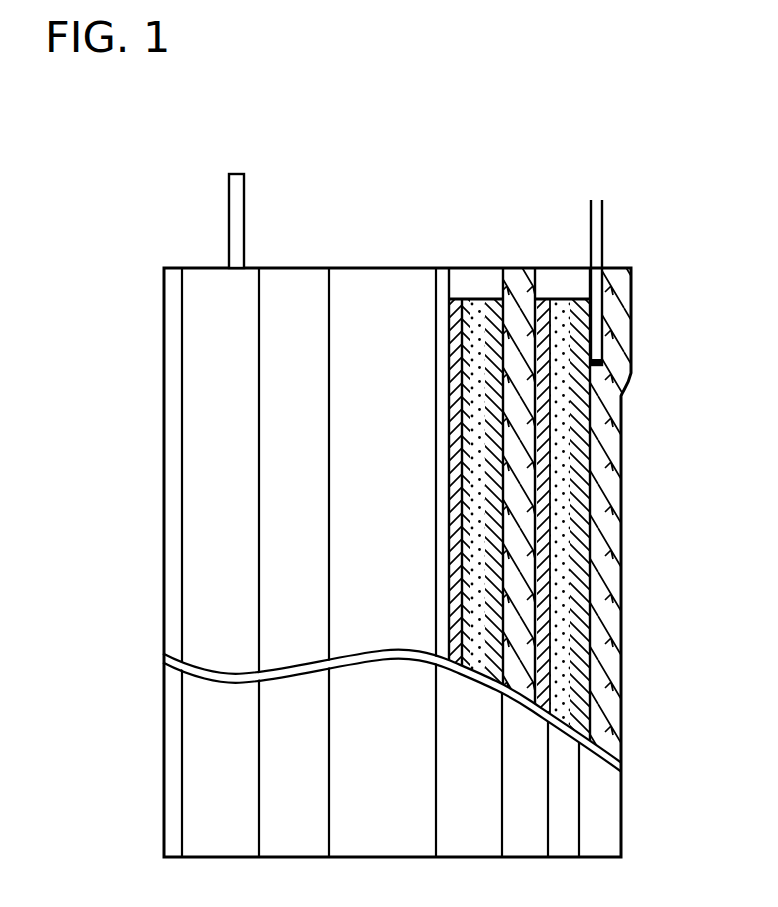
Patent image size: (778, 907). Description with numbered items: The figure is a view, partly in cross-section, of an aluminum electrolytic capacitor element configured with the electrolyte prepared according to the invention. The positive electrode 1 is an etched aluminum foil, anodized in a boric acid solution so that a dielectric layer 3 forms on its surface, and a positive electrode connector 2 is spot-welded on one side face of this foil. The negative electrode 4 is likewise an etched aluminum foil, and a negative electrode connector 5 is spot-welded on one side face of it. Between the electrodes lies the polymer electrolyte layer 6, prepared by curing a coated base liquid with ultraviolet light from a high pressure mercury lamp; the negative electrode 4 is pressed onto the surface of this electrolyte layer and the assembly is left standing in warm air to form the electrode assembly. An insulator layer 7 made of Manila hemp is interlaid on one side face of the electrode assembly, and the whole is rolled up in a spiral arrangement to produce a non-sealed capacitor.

The positive electrode 1 is at (540, 423).
The positive electrode connector 2 is at (236, 207).
The dielectric layer 3 is at (547, 472).
The negative electrode 4 is at (620, 533).
The negative electrode connector 5 is at (597, 218).
The polymer electrolyte layer 6 is at (562, 608).
The insulator layer 7 is at (610, 675).